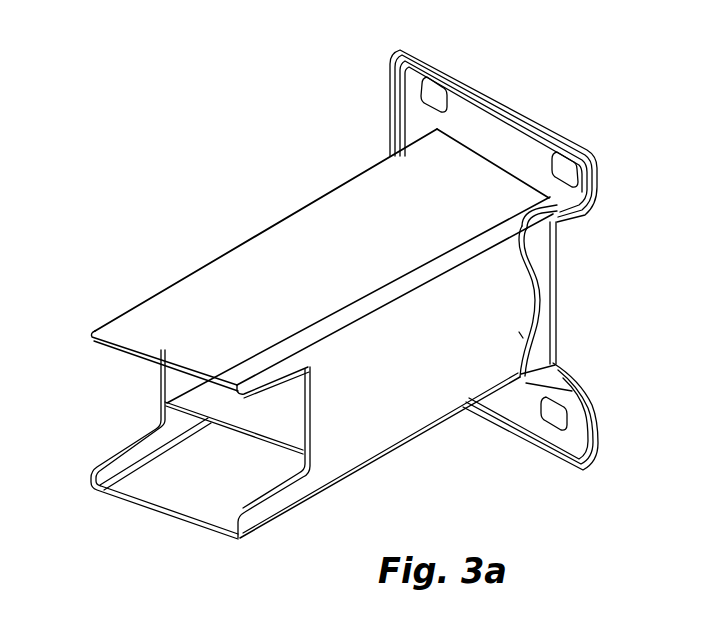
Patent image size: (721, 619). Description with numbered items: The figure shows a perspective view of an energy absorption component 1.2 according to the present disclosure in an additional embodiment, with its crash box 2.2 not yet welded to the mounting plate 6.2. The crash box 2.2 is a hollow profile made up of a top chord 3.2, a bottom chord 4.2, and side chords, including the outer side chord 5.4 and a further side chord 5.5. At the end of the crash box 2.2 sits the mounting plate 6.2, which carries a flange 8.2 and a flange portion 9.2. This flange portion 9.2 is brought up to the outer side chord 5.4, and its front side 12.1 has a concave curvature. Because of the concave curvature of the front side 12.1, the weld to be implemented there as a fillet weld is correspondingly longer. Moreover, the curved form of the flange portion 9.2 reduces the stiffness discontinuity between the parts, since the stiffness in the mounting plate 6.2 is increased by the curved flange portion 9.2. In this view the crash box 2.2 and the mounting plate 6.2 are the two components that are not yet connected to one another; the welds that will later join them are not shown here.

The energy absorption component 1.2 is at (233, 189).
The crash box 2.2 is at (381, 204).
The top chord 3.2 is at (383, 255).
The bottom chord 4.2 is at (427, 430).
The side chord 5.4 is at (464, 345).
The side chord 5.5 is at (162, 364).
The mounting plate 6.2 is at (528, 147).
The flange 8.2 is at (463, 75).
The flange portion 9.2 is at (539, 280).
The front side 12.1 is at (514, 335).